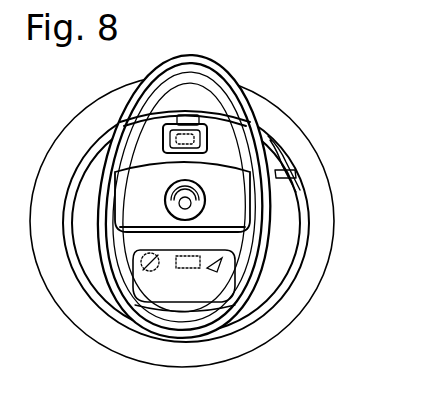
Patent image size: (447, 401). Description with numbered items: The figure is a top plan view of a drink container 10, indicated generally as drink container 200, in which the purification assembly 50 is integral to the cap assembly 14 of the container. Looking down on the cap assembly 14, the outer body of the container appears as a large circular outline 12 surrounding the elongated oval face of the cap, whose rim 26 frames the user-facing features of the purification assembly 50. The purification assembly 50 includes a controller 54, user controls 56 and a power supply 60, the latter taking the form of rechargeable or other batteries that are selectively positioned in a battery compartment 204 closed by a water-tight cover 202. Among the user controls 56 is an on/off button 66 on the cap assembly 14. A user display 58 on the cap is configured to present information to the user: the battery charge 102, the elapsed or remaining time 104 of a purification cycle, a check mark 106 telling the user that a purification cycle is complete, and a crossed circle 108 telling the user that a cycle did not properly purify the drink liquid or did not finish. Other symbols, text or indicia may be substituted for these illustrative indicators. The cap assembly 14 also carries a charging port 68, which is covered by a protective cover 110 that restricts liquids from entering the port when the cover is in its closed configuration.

The drink container 10 is at (323, 31).
The housing cover 12 is at (305, 145).
The cap assembly 14 is at (199, 176).
The outer bezel rim 26 is at (188, 54).
The purification assembly 50 is at (254, 88).
The drink container 200 is at (308, 73).
The controller 54 is at (283, 268).
The battery compartment 204 is at (238, 210).
The user controls 56 is at (286, 153).
The on/off button 66 is at (293, 162).
The user display 58 is at (211, 292).
The power supply 60 is at (100, 157).
The charging port 68 is at (155, 130).
The battery charge 102 is at (208, 237).
The elapsed or remaining time 104 is at (193, 297).
The check mark 106 is at (240, 300).
The crossed circle 108 is at (160, 277).
The protective cover 110 is at (170, 118).
The water-tight cover 202 is at (160, 213).